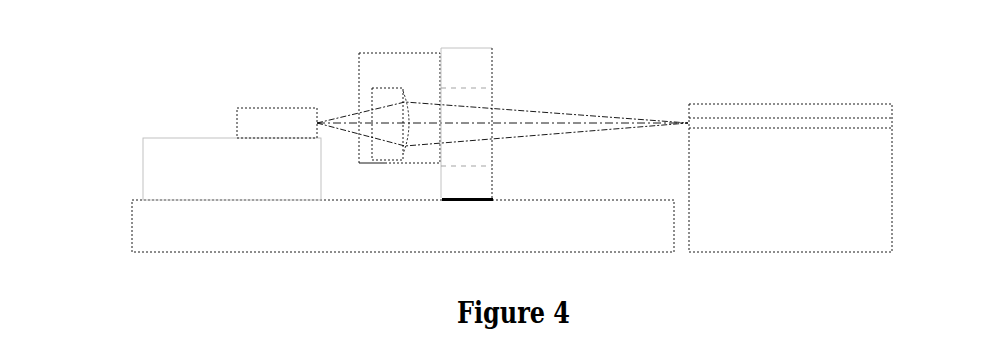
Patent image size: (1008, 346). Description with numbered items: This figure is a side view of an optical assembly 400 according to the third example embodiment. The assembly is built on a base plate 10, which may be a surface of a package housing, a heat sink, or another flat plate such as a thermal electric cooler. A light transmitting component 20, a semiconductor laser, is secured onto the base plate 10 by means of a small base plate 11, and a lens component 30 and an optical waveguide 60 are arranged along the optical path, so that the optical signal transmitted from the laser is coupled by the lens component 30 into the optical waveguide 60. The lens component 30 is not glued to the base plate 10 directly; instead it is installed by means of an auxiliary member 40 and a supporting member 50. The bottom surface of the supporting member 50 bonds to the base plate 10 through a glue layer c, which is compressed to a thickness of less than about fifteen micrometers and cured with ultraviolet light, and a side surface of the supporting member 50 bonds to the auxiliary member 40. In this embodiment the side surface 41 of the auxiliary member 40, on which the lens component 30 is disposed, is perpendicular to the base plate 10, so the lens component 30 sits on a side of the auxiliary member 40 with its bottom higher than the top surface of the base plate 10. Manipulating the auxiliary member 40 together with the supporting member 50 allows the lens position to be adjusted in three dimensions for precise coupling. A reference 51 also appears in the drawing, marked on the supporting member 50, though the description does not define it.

The optical assembly 400 is at (83, 35).
The base plate 10 is at (208, 232).
The small base plate 11 is at (210, 148).
The light transmitting component 20 is at (277, 118).
The lens component 30 is at (377, 92).
The auxiliary member 40 is at (411, 63).
The side surface 41 is at (365, 164).
The supporting member 50 is at (478, 55).
The optical element surface 51 is at (492, 98).
The glue layer c is at (494, 198).
The optical waveguide 60 is at (728, 112).